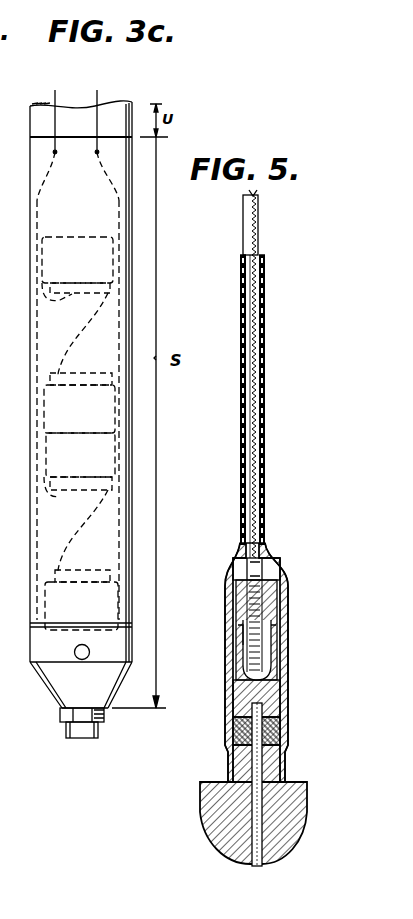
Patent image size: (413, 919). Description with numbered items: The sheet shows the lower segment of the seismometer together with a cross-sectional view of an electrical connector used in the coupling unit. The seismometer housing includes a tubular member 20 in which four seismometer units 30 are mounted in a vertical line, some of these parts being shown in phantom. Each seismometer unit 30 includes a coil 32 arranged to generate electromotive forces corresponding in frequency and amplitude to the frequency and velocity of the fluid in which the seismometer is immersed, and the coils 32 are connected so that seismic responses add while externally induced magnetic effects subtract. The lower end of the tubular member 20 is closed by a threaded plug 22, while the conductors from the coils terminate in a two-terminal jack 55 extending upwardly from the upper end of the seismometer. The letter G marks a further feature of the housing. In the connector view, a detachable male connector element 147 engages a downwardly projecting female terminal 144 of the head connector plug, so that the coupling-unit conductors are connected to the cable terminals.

In FIG. 3c, the two-terminal jack 55 is at (100, 116).
In FIG. 3c, the gap G is at (40, 186).
In FIG. 3c, the seismometer unit 30 is at (52, 250).
In FIG. 3c, the coil 32 is at (42, 312).
In FIG. 3c, the tubular member 20 is at (38, 354).
In FIG. 3c, the threaded plug 22 is at (68, 729).
In FIG. 5, the detachable male connector element 147 is at (282, 606).
In FIG. 5, the female terminal 144 is at (274, 693).